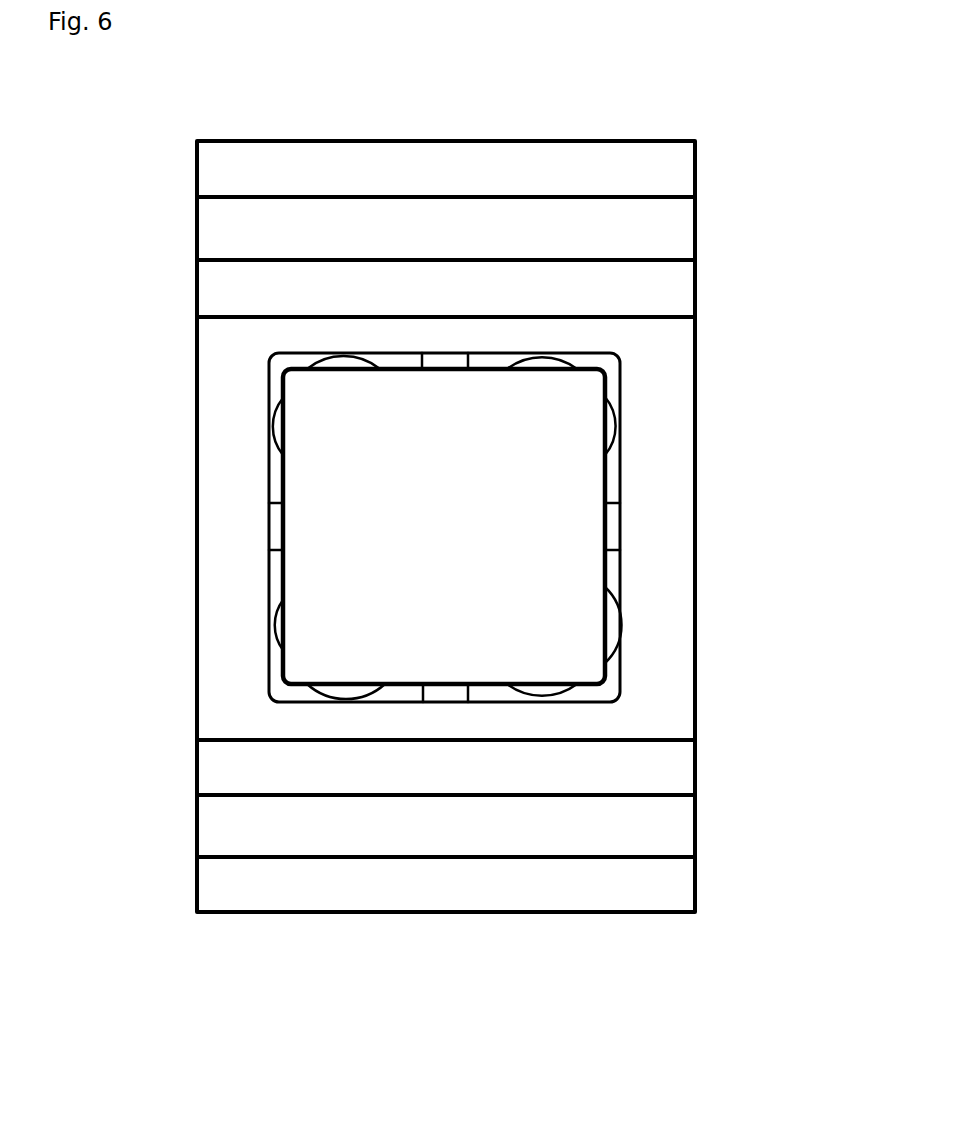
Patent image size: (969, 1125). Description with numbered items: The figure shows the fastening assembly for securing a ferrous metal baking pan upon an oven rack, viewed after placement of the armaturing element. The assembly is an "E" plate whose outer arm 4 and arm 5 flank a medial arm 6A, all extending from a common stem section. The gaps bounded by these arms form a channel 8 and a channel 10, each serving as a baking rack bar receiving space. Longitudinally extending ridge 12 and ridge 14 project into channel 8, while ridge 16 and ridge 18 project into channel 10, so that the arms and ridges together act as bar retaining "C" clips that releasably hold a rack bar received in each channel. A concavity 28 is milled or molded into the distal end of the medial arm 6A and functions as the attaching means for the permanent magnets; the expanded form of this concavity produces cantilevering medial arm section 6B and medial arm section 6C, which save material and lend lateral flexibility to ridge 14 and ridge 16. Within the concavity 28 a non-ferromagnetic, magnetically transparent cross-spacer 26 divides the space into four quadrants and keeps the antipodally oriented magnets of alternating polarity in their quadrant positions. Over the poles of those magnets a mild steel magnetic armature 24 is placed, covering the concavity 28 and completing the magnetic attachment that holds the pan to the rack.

The arm 4 is at (328, 168).
The longitudinally extending ridge 12 is at (225, 198).
The channel 8 is at (227, 229).
The longitudinally extending ridge 14 is at (640, 257).
The cantilevering medial arm section 6B is at (650, 292).
The medial arm 6A is at (340, 327).
The concavity 28 is at (608, 366).
The magnetic armature 24 is at (560, 474).
The cross-spacer 26 is at (275, 525).
The longitudinally extending ridge 16 is at (212, 797).
The channel 10 is at (248, 823).
The longitudinally extending ridge 18 is at (663, 855).
The cantilevering medial arm section 6C is at (552, 776).
The arm 5 is at (361, 887).